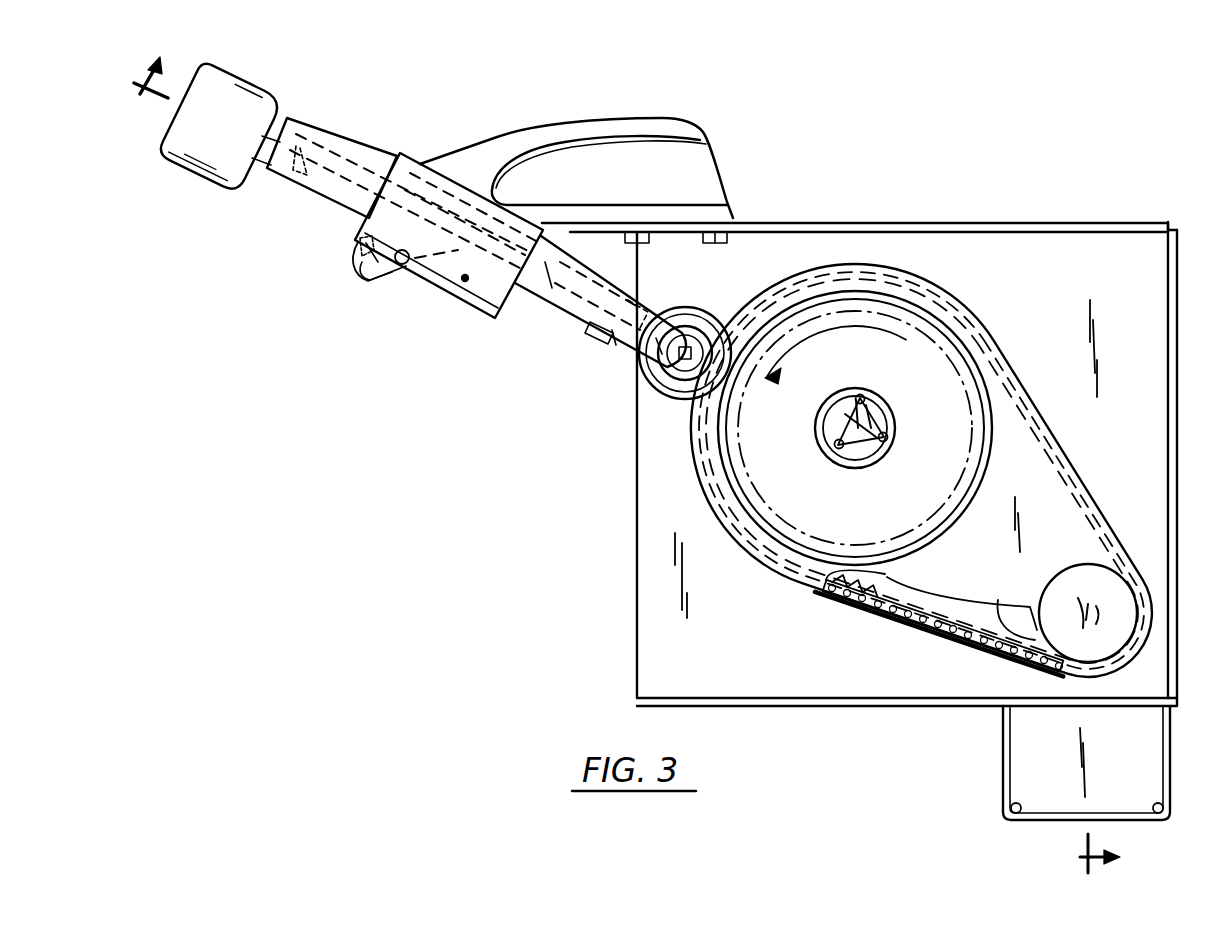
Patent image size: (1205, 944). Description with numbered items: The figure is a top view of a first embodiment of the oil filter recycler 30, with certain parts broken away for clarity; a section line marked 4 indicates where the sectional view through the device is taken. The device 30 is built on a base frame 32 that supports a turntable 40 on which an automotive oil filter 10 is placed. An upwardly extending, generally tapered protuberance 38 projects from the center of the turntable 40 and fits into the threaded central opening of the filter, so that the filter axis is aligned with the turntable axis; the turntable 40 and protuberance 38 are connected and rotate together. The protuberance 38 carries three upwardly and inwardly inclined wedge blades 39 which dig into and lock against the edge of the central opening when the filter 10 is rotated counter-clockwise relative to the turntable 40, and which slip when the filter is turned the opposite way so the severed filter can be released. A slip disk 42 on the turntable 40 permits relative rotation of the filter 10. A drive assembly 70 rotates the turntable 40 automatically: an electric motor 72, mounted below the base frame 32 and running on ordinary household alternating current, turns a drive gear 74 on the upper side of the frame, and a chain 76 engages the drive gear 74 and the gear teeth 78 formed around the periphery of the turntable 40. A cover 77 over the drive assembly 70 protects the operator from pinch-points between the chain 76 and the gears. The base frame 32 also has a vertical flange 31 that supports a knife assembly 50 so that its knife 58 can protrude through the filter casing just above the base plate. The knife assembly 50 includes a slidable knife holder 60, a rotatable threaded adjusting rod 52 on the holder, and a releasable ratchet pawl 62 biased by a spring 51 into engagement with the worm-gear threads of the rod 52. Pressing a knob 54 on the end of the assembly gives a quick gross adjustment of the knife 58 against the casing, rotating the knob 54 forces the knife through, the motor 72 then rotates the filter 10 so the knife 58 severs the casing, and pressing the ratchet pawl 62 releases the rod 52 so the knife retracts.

The section line 4- 4 is at (635, 456).
The oil filter 10 is at (955, 325).
The oil filter recycler 30 is at (600, 544).
The vertical flange 31 is at (803, 222).
The base frame 32 is at (680, 590).
The protuberance 38 is at (885, 416).
The wedge blades 39 is at (862, 398).
The turntable 40 is at (886, 295).
The slip disk 42 is at (933, 316).
The knife assembly 50 is at (487, 141).
The spring 51 is at (358, 254).
The threaded adjusting rod 52 is at (353, 214).
The knob 54 is at (262, 92).
The knife 58 is at (655, 378).
The knife holder 60 is at (300, 192).
The ratchet pawl 62 is at (376, 282).
The drive assembly 70 is at (990, 720).
The electric motor 72 is at (1005, 770).
The drive gear 74 is at (1040, 622).
The chain 76 is at (924, 604).
The cover 77 is at (848, 260).
The gear teeth 78 is at (878, 612).